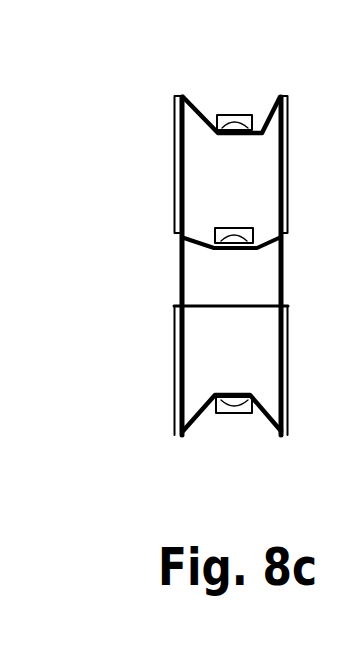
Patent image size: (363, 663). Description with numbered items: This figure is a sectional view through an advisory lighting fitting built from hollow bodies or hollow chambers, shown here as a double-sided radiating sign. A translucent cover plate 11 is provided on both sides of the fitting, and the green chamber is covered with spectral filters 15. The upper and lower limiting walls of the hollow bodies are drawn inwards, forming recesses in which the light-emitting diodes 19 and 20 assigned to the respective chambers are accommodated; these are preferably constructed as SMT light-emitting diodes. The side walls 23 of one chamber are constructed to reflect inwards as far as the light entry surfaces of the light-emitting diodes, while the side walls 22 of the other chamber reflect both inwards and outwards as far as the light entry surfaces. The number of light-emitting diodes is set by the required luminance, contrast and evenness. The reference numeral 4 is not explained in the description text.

The assembly 4 is at (1, 137).
The translucent cover plate 11 is at (180, 268).
The spectral filter 15 is at (175, 170).
The light-emitting diode 19 is at (233, 120).
The light-emitting diode 20 is at (237, 240).
The side wall 22 is at (264, 246).
The side wall 23 is at (199, 110).